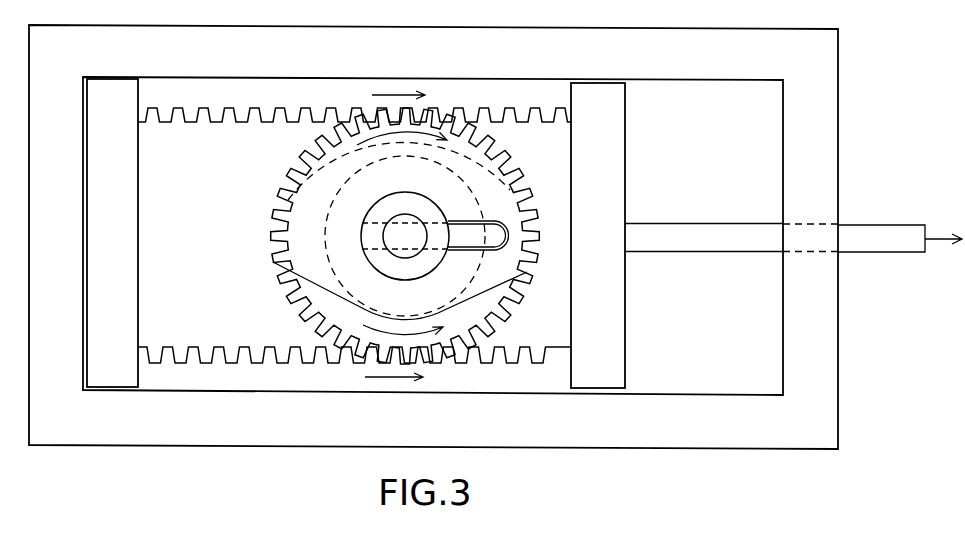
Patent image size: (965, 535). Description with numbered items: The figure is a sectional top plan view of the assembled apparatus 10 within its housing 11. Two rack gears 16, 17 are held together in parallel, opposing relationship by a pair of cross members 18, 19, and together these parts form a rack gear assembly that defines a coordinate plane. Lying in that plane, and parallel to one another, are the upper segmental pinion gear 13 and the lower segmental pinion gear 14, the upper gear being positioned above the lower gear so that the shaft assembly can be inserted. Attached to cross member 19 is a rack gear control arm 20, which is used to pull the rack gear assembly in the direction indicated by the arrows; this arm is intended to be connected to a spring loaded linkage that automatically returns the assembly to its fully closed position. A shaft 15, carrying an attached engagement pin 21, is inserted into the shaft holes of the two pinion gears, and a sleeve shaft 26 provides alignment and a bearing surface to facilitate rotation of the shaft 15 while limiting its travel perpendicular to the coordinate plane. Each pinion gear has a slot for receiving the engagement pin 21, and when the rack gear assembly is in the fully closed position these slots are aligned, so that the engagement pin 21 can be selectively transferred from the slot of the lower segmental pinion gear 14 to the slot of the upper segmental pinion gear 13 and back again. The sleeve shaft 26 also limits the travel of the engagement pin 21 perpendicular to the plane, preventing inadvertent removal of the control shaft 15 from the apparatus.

The apparatus 10 is at (577, 495).
The housing 11 is at (265, 445).
The upper segmental pinion gear 13 is at (493, 137).
The lower segmental pinion gear 14 is at (288, 299).
The shaft 15 is at (407, 221).
The rack gear 16 is at (482, 92).
The rack gear 17 is at (487, 392).
The cross member 18 is at (138, 233).
The cross member 19 is at (625, 150).
The rack gear control arm 20 is at (698, 252).
The engagement pin 21 is at (497, 220).
The sleeve shaft 26 is at (437, 256).